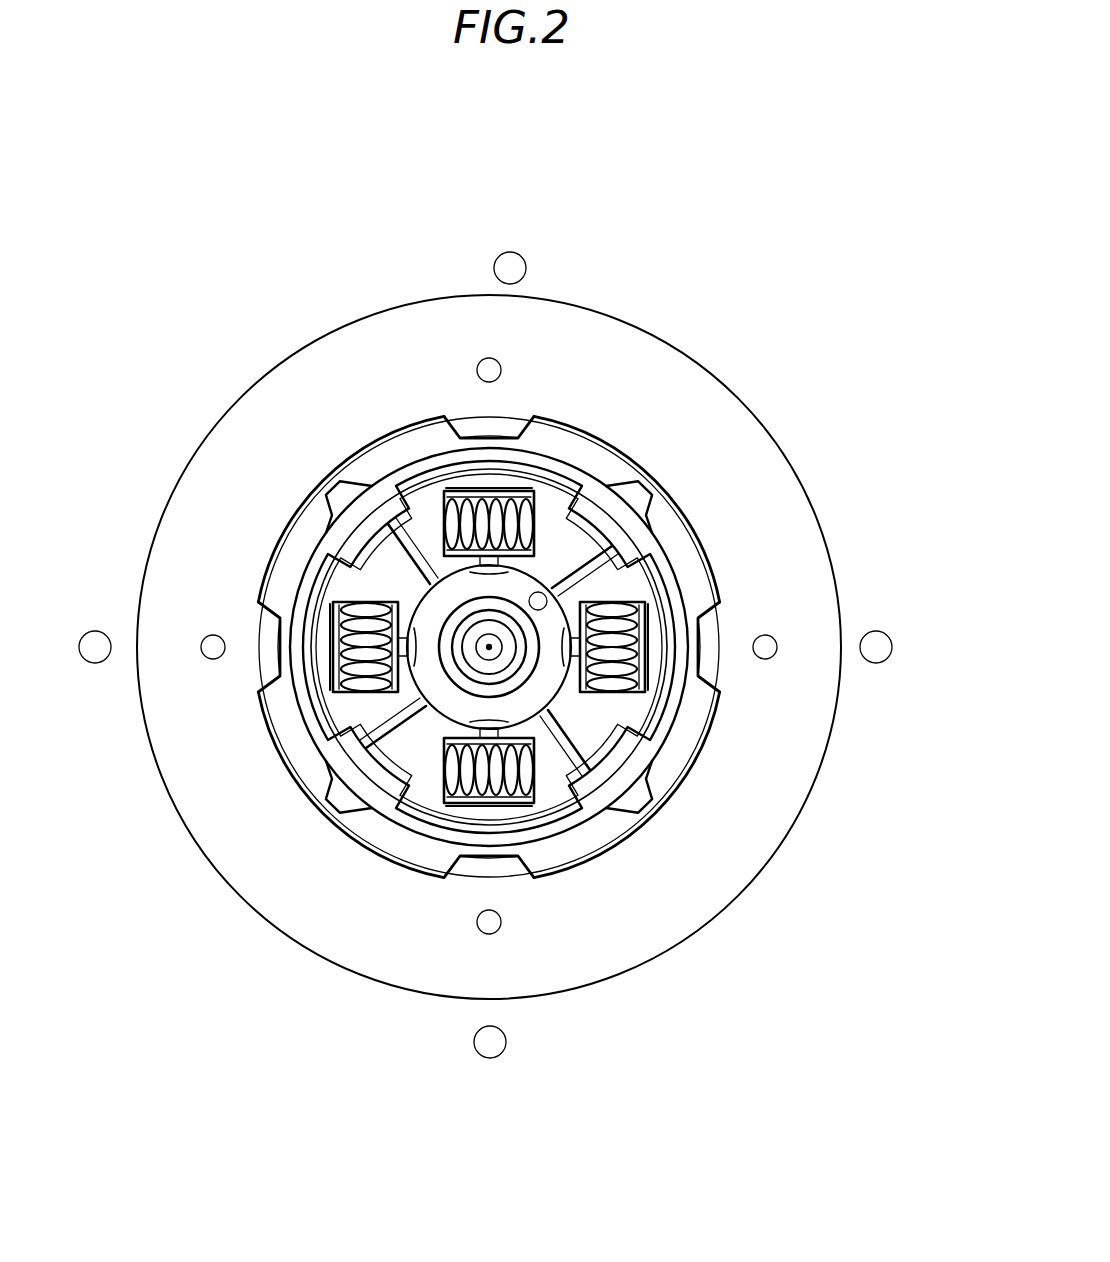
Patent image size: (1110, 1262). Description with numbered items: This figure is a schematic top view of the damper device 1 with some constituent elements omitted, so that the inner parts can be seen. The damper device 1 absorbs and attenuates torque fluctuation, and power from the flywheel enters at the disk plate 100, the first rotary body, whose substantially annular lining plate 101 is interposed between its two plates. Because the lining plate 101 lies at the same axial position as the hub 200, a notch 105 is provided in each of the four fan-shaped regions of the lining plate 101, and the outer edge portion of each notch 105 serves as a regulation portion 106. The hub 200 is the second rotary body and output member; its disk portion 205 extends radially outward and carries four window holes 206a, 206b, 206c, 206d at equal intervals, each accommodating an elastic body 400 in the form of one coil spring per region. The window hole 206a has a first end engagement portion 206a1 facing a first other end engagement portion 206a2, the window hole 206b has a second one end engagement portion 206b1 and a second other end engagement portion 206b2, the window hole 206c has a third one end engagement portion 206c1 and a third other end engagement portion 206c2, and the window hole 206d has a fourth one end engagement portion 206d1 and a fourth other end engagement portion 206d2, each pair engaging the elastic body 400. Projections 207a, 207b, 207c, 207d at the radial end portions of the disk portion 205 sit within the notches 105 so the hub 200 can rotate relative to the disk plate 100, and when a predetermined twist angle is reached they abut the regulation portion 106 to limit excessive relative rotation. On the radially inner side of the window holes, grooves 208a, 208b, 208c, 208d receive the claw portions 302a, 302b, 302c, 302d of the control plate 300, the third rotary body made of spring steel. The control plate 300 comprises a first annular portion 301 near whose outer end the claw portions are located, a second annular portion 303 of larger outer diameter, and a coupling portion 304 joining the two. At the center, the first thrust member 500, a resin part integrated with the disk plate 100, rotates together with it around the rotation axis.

The damper device 1 is at (779, 152).
The disk plate 100 is at (743, 390).
The lining plate 101 is at (643, 346).
The notch 105 is at (407, 447).
The regulation portion 106 is at (492, 470).
The hub 200 is at (664, 552).
The disk portion 205 is at (622, 682).
The window hole 206a is at (500, 515).
The first end engagement portion 206a1 is at (482, 562).
The first other end engagement portion 206a2 is at (535, 494).
The window hole 206b is at (612, 642).
The second one end engagement portion 206b1 is at (582, 636).
The second other end engagement portion 206b2 is at (644, 690).
The window hole 206c is at (514, 790).
The third one end engagement portion 206c1 is at (522, 746).
The third other end engagement portion 206c2 is at (450, 792).
The window hole 206d is at (342, 655).
The fourth one end engagement portion 206d1 is at (400, 690).
The fourth other end engagement portion 206d2 is at (370, 600).
The projection 207a is at (664, 532).
The projection 207b is at (622, 780).
The projection 207c is at (334, 792).
The projection 207d is at (330, 600).
The groove 208a is at (517, 512).
The groove 208b is at (606, 672).
The groove 208c is at (472, 762).
The groove 208d is at (386, 700).
The control plate 300 is at (660, 702).
The first annular portion 301 is at (334, 495).
The claw portion 302a is at (600, 560).
The claw portion 302b is at (570, 760).
The claw portion 302c is at (380, 728).
The claw portion 302d is at (412, 540).
The second annular portion 303 is at (402, 742).
The coupling portion 304 is at (402, 776).
The elastic body 400 is at (345, 608).
The first thrust member 500 is at (458, 610).